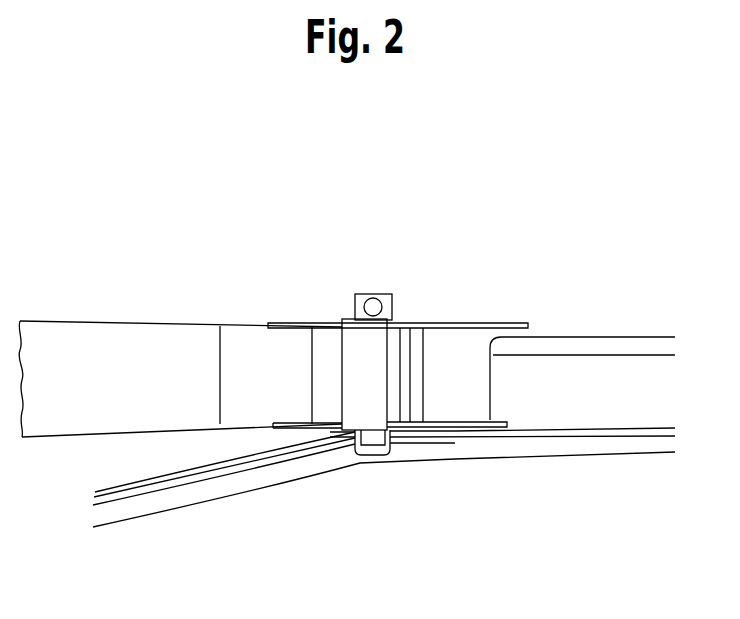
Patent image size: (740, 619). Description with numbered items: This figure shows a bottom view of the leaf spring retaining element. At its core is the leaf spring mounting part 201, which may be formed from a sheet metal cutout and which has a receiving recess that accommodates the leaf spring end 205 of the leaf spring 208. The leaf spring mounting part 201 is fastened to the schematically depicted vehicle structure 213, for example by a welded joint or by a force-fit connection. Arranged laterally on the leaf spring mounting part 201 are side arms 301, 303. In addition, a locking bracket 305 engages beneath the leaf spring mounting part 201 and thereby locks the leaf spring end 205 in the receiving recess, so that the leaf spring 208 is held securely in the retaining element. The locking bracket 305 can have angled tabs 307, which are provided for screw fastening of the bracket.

The leaf spring 208 is at (80, 335).
The leaf spring mounting part 201 is at (282, 323).
The angled tabs 307 is at (383, 295).
The leaf spring end 205 is at (403, 352).
The side arm 301 is at (477, 325).
The locking bracket 305 is at (357, 403).
The side arm 303 is at (455, 427).
The vehicle structure 213 is at (607, 428).